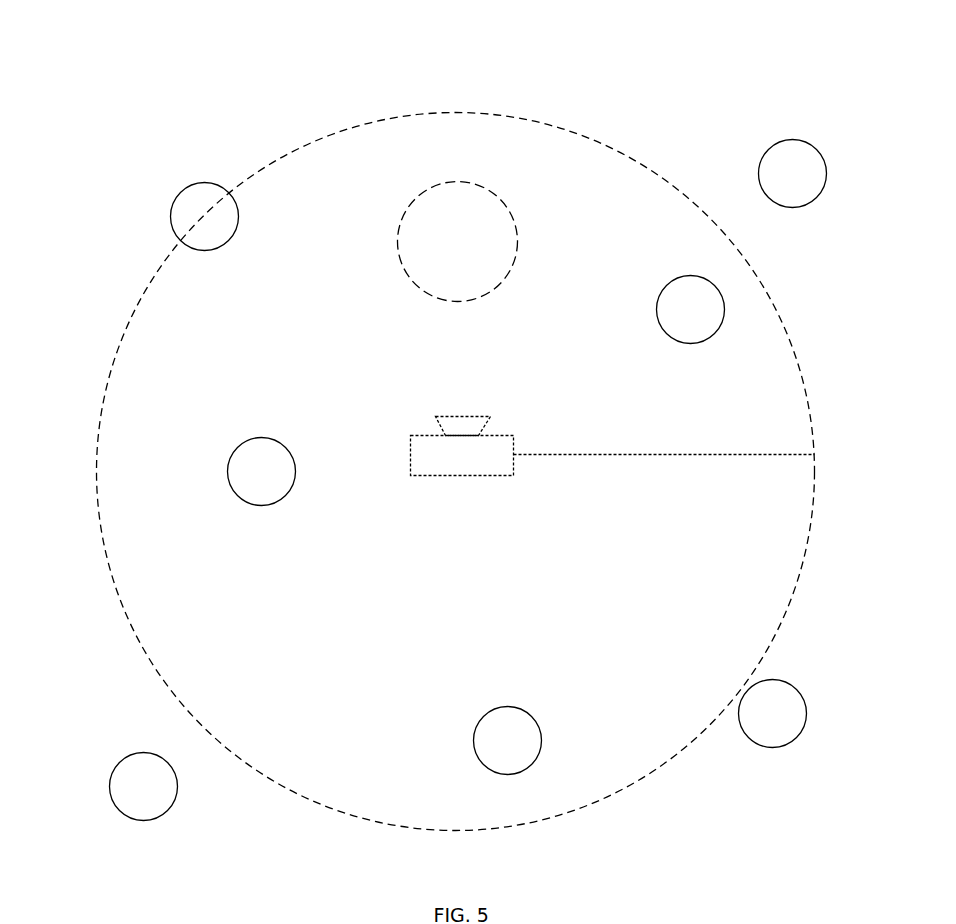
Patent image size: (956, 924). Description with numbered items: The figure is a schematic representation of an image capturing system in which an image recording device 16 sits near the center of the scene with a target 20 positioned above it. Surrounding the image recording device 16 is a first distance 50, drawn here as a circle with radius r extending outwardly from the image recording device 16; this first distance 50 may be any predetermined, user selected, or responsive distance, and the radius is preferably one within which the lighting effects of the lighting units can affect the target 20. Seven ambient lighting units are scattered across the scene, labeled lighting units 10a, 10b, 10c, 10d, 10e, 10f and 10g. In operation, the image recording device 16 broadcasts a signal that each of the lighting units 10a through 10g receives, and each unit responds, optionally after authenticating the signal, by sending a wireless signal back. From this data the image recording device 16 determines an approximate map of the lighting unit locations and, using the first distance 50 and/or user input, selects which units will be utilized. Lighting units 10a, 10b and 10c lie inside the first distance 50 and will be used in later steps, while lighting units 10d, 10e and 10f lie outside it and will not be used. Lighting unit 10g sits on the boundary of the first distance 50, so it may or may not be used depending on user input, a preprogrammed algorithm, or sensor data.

The first distance 50 is at (512, 108).
The target 20 is at (388, 255).
The image recording device 16 is at (412, 485).
The lighting unit 10a is at (682, 262).
The lighting unit 10b is at (228, 438).
The lighting unit 10c is at (538, 772).
The lighting unit 10d is at (803, 222).
The lighting unit 10e is at (739, 753).
The lighting unit 10f is at (132, 747).
The lighting unit 10g is at (195, 168).